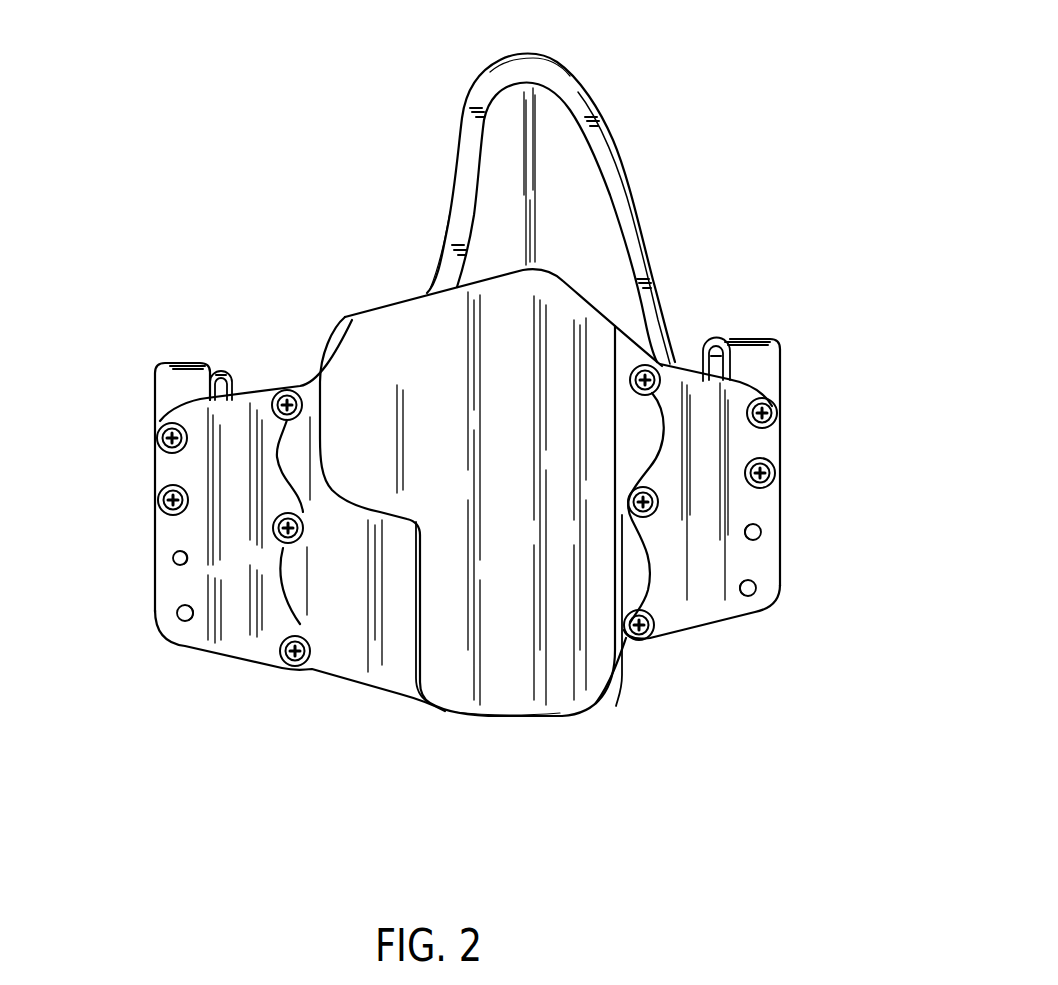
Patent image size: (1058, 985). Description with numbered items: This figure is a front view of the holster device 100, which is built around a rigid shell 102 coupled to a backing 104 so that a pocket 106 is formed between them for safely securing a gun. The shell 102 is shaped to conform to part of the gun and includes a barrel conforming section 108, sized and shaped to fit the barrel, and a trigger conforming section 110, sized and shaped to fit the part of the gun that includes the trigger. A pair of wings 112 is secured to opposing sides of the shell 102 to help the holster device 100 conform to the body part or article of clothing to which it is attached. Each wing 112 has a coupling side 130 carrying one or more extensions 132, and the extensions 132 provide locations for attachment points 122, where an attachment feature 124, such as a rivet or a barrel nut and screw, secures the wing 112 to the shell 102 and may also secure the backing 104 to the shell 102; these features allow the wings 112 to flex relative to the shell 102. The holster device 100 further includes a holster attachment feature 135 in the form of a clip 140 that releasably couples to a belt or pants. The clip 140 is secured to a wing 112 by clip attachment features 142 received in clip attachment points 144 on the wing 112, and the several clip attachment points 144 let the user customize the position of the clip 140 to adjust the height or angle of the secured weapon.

The holster device 100 is at (699, 60).
The shell 102 is at (565, 356).
The backing 104 is at (593, 193).
The pocket 106 is at (601, 281).
The barrel conforming section 108 is at (553, 663).
The trigger conforming section 110 is at (373, 403).
The wings 112 is at (202, 532).
The attachment points 122 is at (308, 675).
The attachment feature 124 is at (291, 657).
The coupling side 130 is at (277, 453).
The extensions 132 is at (325, 682).
The holster attachment feature 135 is at (758, 318).
The clip 140 is at (180, 382).
The clip attachment features 142 is at (158, 442).
The clip attachment points 144 is at (170, 634).